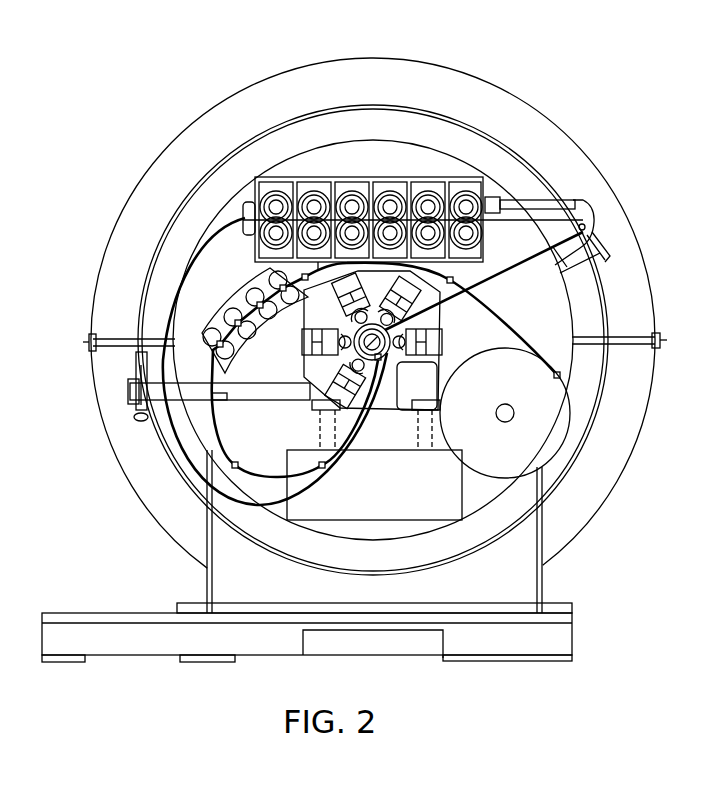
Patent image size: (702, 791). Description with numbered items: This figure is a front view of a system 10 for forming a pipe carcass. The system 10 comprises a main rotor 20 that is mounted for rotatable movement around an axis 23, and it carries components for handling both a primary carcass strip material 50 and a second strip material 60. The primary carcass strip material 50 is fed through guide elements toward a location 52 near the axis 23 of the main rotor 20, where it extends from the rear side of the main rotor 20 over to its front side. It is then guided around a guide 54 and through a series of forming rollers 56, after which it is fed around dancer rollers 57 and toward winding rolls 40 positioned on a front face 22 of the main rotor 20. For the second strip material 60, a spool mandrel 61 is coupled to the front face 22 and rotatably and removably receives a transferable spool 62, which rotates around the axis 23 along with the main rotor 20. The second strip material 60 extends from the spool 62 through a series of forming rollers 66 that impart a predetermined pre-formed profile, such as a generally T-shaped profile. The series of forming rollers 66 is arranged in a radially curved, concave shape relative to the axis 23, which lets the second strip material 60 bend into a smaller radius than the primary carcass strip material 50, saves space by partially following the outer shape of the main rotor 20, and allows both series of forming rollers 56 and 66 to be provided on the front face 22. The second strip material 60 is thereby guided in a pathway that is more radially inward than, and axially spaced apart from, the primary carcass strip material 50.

The system 10 is at (172, 86).
The main rotor 20 is at (367, 166).
The front face 22 is at (543, 294).
The axis 23 is at (330, 312).
The winding rolls 40 is at (345, 373).
The primary carcass strip material 50 is at (187, 247).
The location 52 is at (425, 327).
The guide 54 is at (588, 224).
The forming rollers 56 is at (467, 190).
The dancer rollers 57 is at (142, 424).
The second strip material 60 is at (553, 350).
The spool mandrel 61 is at (508, 414).
The spool 62 is at (540, 450).
The forming rollers 66 is at (221, 326).